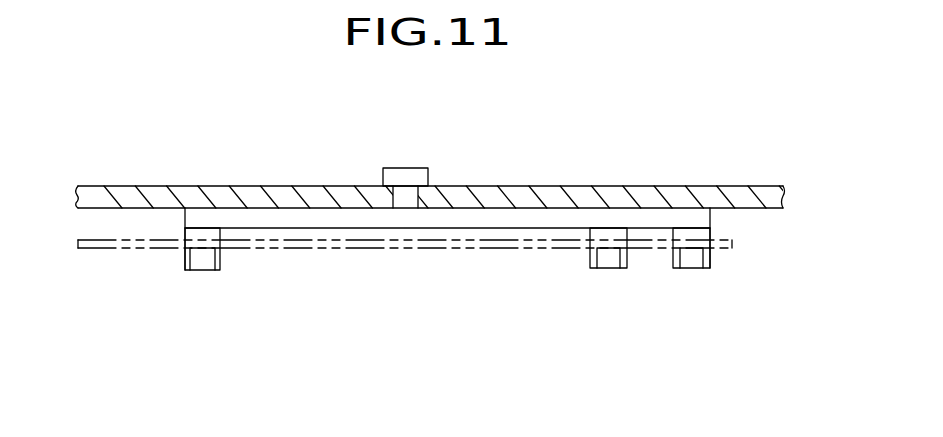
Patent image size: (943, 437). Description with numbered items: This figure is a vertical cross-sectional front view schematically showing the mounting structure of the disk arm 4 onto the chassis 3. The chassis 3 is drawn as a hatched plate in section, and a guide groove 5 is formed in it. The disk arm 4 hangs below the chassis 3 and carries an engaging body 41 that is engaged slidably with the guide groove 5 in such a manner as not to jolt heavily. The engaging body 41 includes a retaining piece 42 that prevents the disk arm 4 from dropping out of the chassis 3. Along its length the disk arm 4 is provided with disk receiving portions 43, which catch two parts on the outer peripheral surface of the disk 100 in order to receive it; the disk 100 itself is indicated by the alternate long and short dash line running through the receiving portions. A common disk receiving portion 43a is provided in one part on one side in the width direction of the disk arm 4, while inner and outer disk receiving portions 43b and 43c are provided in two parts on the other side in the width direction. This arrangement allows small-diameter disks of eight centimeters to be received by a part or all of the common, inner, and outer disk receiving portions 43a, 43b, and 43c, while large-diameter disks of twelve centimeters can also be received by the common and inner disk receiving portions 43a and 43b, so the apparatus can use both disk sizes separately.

The chassis 3 is at (640, 184).
The disk arm 4 is at (473, 229).
The guide groove 5 is at (413, 157).
The engaging body 41 is at (421, 171).
The retaining piece 42 is at (407, 197).
The disk receiving portions 43 is at (459, 278).
The common disk receiving portion 43a is at (203, 271).
The inner disk receiving portion 43b is at (612, 268).
The outer disk receiving portion 43c is at (692, 268).
The disk 100 is at (736, 240).